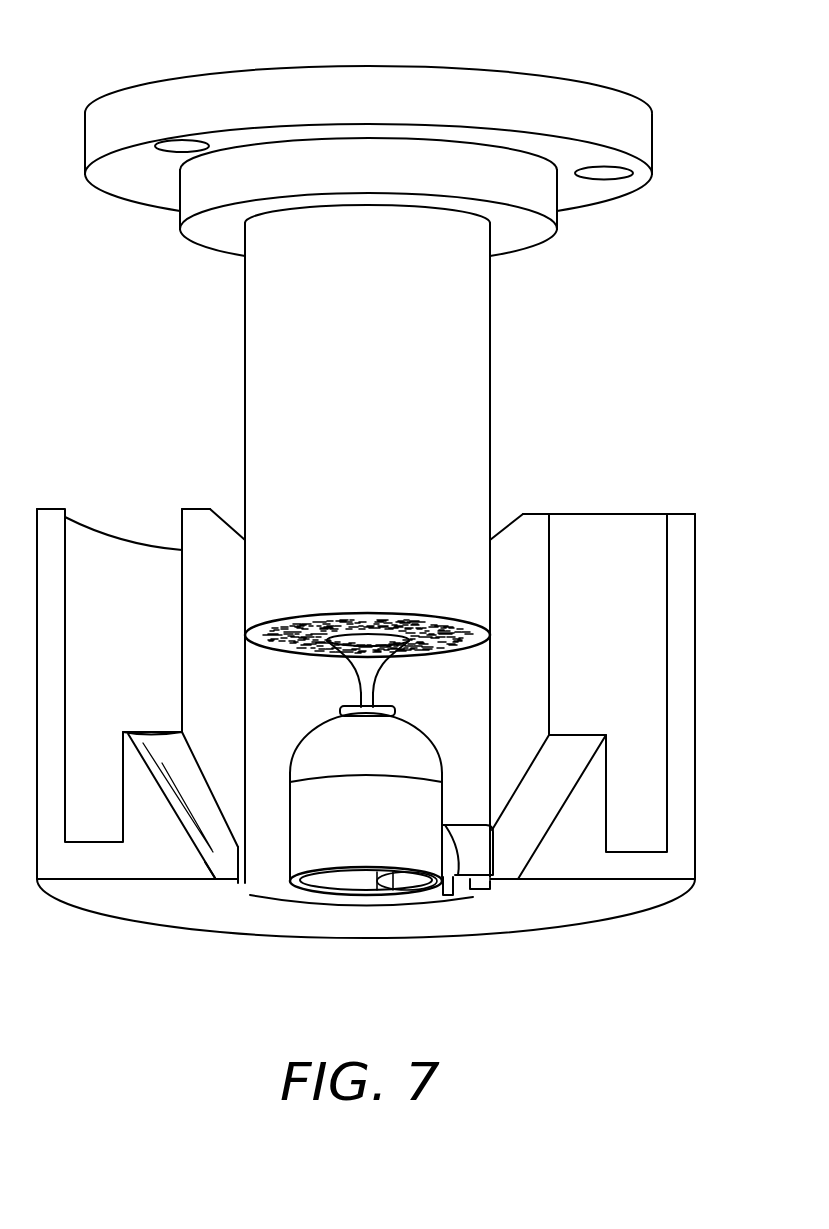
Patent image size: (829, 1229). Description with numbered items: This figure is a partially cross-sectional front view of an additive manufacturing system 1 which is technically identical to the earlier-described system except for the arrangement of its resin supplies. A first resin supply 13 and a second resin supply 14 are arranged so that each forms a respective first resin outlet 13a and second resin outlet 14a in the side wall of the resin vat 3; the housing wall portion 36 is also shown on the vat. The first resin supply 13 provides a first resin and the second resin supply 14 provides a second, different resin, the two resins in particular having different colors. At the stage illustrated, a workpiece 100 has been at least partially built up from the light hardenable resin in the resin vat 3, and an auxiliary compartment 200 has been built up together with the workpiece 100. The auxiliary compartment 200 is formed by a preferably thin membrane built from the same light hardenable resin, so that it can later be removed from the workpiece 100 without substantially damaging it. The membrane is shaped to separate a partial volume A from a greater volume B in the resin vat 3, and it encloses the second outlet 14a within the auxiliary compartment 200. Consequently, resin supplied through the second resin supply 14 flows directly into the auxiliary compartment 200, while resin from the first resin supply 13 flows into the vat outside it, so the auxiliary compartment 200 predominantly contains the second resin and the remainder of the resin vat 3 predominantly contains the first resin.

The system 1 is at (630, 43).
The resin vat 3 is at (683, 540).
The housing upper tab 36 is at (532, 540).
The first resin supply 13 is at (193, 793).
The first resin outlet 13a is at (232, 848).
The second resin supply 14 is at (523, 845).
The second resin outlet 14a is at (495, 887).
The workpiece 100 is at (380, 813).
The auxiliary compartment 200 is at (478, 848).
The partial volume A is at (443, 890).
The greater volume B is at (272, 827).